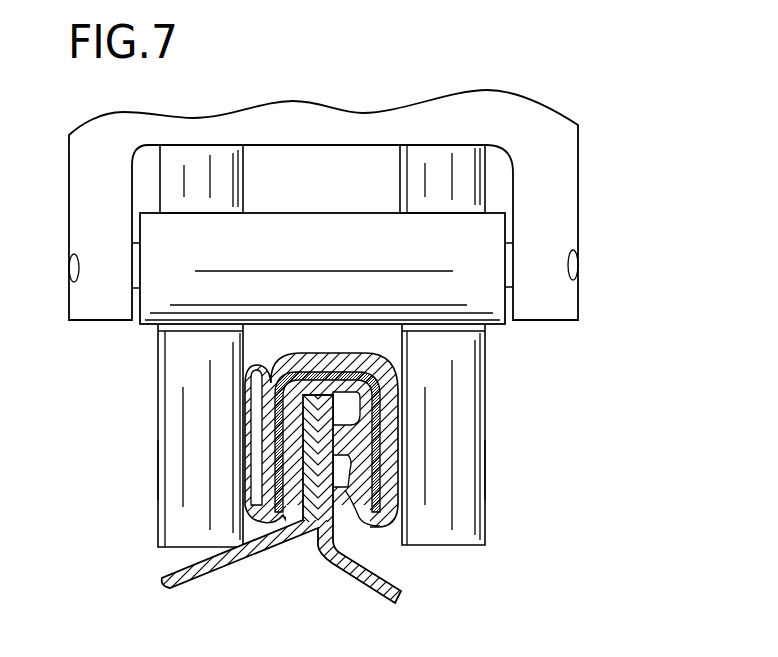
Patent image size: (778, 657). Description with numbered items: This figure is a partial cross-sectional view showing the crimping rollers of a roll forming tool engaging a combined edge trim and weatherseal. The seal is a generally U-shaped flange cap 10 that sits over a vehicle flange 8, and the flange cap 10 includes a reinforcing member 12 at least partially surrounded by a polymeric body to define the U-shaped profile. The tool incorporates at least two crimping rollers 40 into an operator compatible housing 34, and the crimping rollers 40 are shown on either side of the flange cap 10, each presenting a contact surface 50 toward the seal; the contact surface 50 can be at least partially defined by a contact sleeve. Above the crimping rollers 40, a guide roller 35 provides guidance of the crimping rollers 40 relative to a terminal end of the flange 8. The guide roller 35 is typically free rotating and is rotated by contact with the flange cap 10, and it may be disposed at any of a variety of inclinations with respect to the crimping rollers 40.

The vehicle flange 8 is at (327, 516).
The flange cap 10 is at (378, 534).
The reinforcing member 12 is at (295, 377).
The housing 34 is at (563, 165).
The guide roller 35 is at (477, 303).
The crimping roller 40 is at (160, 430).
The contact surface 50 is at (148, 467).